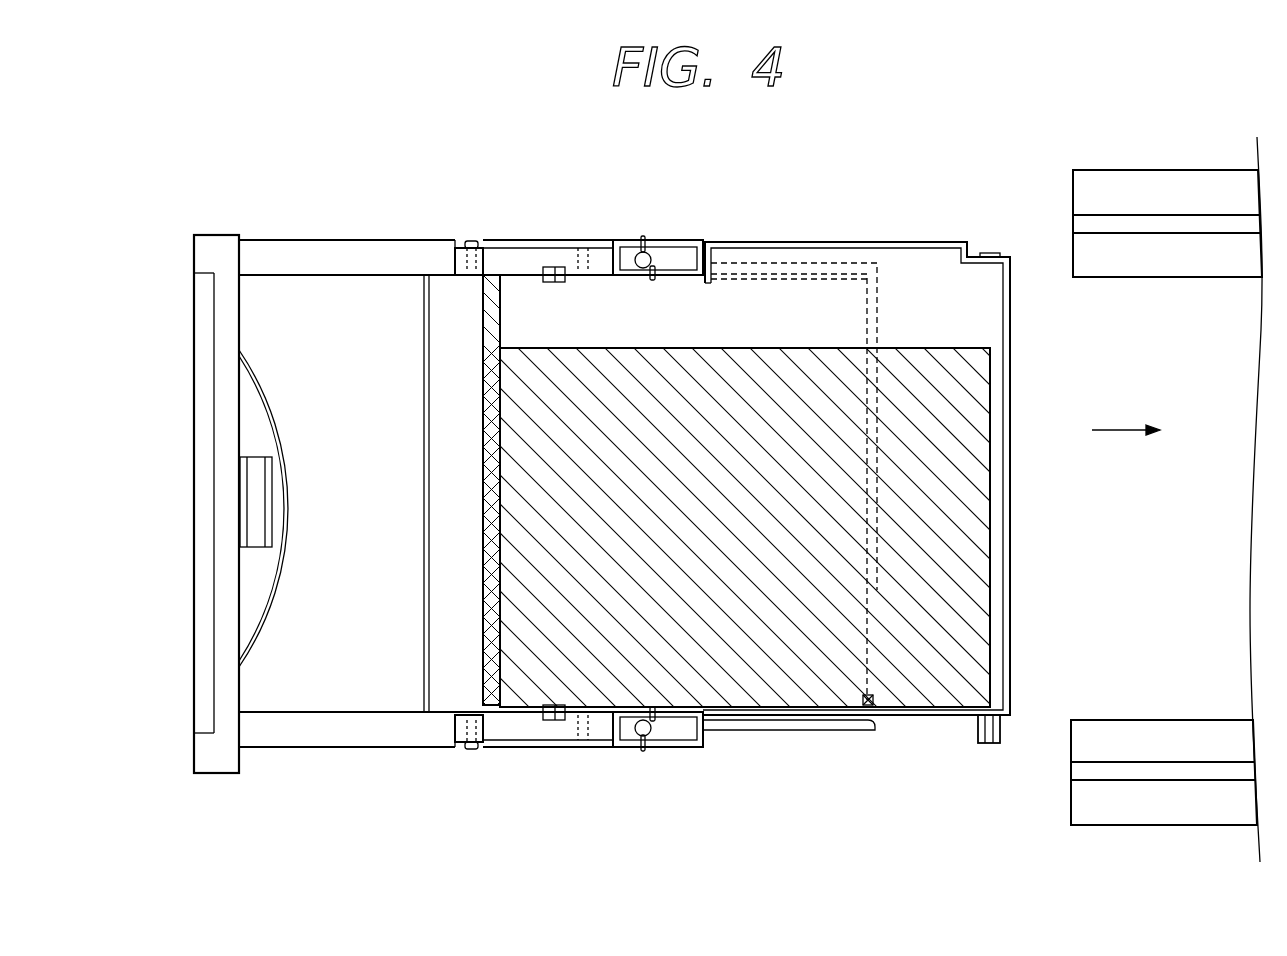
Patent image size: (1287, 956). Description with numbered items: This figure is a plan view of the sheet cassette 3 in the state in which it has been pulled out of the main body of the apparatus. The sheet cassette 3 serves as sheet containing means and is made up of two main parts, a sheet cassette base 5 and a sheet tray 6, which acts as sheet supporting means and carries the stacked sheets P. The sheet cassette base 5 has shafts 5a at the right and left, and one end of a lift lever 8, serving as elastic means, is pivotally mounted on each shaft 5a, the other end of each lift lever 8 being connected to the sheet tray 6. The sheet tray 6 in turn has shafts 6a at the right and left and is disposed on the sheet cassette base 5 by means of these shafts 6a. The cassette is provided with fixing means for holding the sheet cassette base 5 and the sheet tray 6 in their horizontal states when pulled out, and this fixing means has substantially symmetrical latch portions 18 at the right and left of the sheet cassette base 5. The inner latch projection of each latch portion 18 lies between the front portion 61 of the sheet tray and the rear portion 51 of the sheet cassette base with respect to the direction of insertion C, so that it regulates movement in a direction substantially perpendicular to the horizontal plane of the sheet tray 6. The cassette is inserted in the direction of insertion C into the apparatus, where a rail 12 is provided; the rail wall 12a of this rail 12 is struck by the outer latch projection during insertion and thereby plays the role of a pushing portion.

The sheet cassette 3 is at (808, 819).
The sheet cassette base 5 is at (340, 250).
The shafts 5a is at (470, 244).
The sheet tray 6 is at (983, 323).
The shafts 6a is at (583, 246).
The lift lever 8 is at (520, 250).
The rail 12 is at (1100, 178).
The rail wall 12a is at (1080, 226).
The latch portions 18 is at (695, 216).
The rear portion of the sheet cassette base 51 is at (880, 288).
The front portion of the sheet tray 61 is at (483, 307).
The sheets P is at (962, 492).
The direction of insertion C is at (1126, 447).